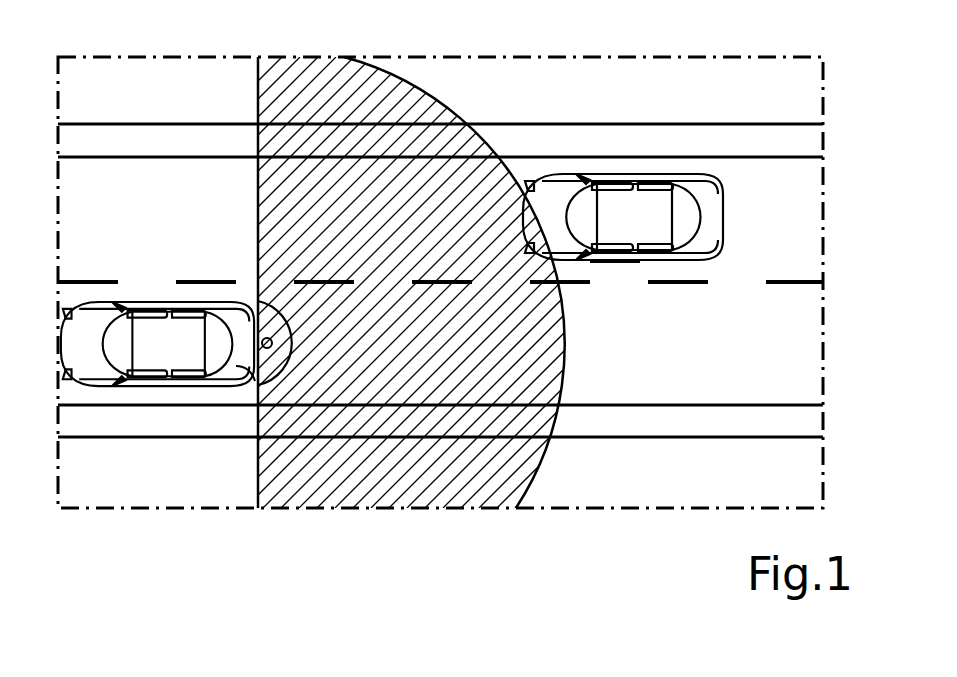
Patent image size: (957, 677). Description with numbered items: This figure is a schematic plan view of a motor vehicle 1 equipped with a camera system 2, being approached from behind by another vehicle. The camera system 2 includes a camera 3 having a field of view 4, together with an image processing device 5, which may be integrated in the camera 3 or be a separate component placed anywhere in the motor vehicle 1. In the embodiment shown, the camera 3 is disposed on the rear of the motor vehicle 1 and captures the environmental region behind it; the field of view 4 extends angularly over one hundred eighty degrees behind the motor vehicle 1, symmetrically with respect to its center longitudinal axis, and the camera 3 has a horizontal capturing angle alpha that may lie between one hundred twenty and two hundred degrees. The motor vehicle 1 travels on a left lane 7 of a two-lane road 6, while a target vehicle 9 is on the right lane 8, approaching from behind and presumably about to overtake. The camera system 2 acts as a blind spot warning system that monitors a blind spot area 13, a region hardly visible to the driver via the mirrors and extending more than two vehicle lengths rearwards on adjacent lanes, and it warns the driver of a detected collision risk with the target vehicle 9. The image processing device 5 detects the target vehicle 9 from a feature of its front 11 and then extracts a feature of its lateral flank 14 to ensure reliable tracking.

The motor vehicle 1 is at (168, 348).
The camera system 2 is at (253, 373).
The camera 3 is at (258, 400).
The field of view 4 is at (393, 367).
The image processing device 5 is at (270, 357).
The road 6 is at (660, 378).
The left lane 7 is at (797, 347).
The right lane 8 is at (800, 225).
The target vehicle 9 is at (612, 198).
The front 11 is at (517, 197).
The blind spot area 13 is at (350, 190).
The lateral flank 14 is at (604, 263).